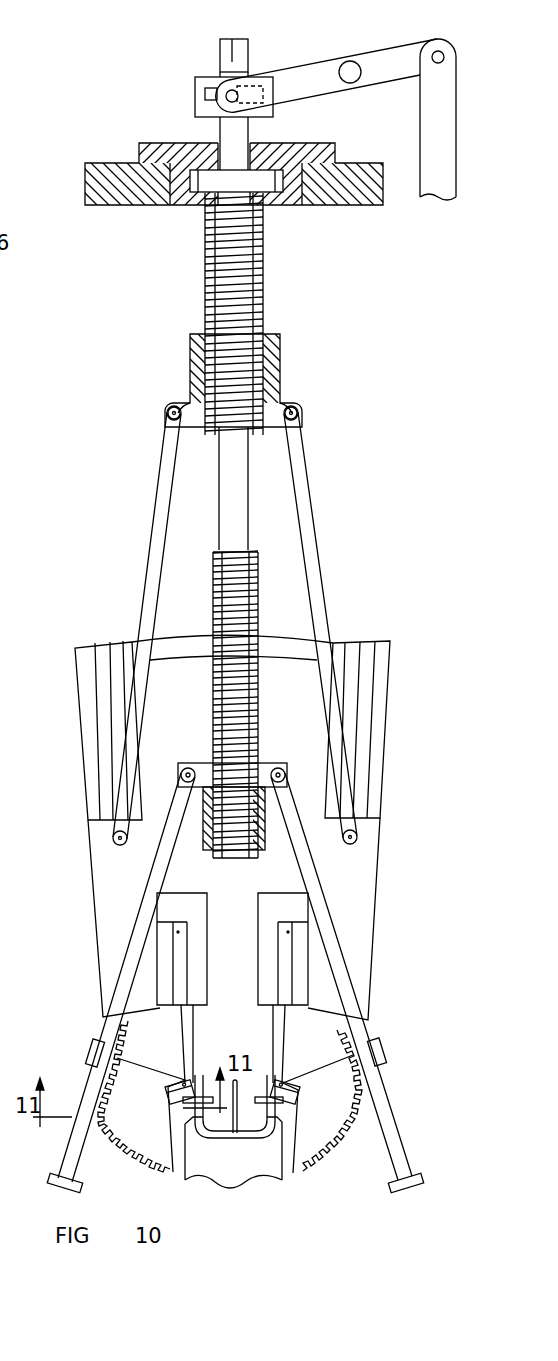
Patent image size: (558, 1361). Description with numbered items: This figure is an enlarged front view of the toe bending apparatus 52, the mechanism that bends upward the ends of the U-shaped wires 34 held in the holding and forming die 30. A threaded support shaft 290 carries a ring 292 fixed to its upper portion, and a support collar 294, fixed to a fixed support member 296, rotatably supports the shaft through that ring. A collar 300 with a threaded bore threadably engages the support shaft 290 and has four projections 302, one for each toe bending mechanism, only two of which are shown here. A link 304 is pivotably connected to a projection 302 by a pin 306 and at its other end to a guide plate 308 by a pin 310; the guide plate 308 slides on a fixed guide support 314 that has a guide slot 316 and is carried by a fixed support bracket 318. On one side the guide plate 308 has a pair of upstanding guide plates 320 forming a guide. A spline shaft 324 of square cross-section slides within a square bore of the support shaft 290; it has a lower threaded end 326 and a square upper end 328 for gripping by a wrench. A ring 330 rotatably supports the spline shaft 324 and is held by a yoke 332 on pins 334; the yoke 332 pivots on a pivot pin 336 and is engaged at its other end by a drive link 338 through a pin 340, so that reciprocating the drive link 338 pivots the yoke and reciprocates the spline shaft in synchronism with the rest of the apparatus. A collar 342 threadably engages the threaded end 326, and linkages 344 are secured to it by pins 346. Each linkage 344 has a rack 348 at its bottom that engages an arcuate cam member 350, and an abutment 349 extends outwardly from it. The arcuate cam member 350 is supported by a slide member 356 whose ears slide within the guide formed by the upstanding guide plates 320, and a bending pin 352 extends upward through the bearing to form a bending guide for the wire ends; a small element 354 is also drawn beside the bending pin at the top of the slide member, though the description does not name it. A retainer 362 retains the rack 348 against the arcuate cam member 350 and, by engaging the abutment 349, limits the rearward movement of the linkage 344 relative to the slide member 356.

The holding and forming die 30 is at (230, 1163).
The U-shaped wires 34 is at (268, 1128).
The toe bending apparatus 52 is at (195, 669).
The threaded support shaft 290 is at (225, 325).
The ring 292 is at (212, 176).
The support collar 294 is at (168, 157).
The fixed support member 296 is at (118, 180).
The collar 300 is at (272, 355).
The projections 302 is at (170, 405).
The link 304 is at (130, 762).
The pin 306 is at (170, 415).
The guide plate 308 is at (113, 877).
The pin 310 is at (115, 834).
The fixed guide support 314 is at (88, 690).
The guide slot 316 is at (108, 655).
The fixed support bracket 318 is at (188, 646).
The upstanding guide plates 320 is at (268, 948).
The spline shaft 324 is at (232, 498).
The lower threaded end 326 is at (250, 612).
The square upper end 328 is at (230, 50).
The ring 330 is at (200, 90).
The yoke 332 is at (296, 80).
The pins 334 is at (228, 92).
The pivot pin 336 is at (350, 60).
The drive link 338 is at (440, 105).
The pin 340 is at (445, 52).
The collar 342 is at (273, 764).
The linkages 344 is at (150, 904).
The pins 346 is at (187, 767).
The rack 348 is at (90, 1143).
The abutment 349 is at (47, 1181).
The arcuate cam member 350 is at (160, 1146).
The bending pin 352 is at (273, 1058).
The clamp 354 is at (170, 1086).
The slide member 356 is at (282, 1033).
The retainer 362 is at (90, 1041).